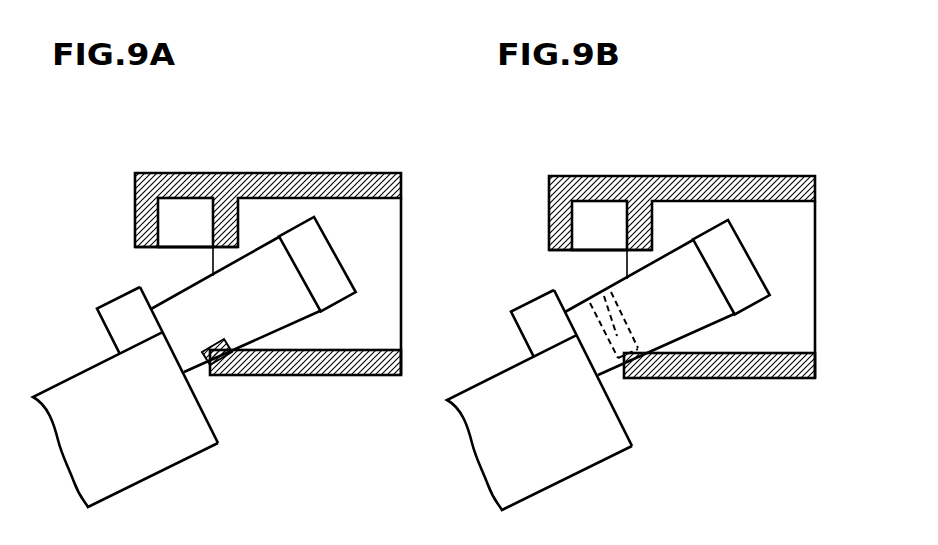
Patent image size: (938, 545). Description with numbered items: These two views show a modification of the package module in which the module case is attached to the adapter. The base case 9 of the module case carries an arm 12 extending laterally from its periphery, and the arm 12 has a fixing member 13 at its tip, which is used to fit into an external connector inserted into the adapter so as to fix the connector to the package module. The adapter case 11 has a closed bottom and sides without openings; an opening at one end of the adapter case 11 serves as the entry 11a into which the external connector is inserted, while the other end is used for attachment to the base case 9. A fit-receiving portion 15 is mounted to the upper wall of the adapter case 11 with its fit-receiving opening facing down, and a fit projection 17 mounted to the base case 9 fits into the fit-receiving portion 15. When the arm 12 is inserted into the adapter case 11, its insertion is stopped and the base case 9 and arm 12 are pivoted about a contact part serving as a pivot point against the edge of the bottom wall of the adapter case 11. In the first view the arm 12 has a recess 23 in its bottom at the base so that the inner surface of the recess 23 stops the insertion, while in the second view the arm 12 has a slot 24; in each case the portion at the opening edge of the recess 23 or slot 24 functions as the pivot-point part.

In FIG. 9A, the base case 9 is at (190, 412).
In FIG. 9B, the base case 9 is at (576, 400).
In FIG. 9A, the adapter case 11 is at (337, 173).
In FIG. 9B, the adapter case 11 is at (682, 250).
In FIG. 9A, the entry 11a is at (402, 312).
In FIG. 9B, the entry 11a is at (852, 289).
In FIG. 9A, the arm 12 is at (265, 277).
In FIG. 9B, the arm 12 is at (649, 291).
In FIG. 9A, the fixing member 13 is at (318, 260).
In FIG. 9B, the fixing member 13 is at (753, 265).
In FIG. 9A, the fit-receiving portion 15 is at (135, 190).
In FIG. 9B, the fit-receiving portion 15 is at (555, 223).
In FIG. 9A, the fit projection 17 is at (127, 328).
In FIG. 9B, the fit projection 17 is at (497, 331).
In FIG. 9A, the recess 23 is at (216, 348).
In FIG. 9B, the slot 24 is at (602, 307).